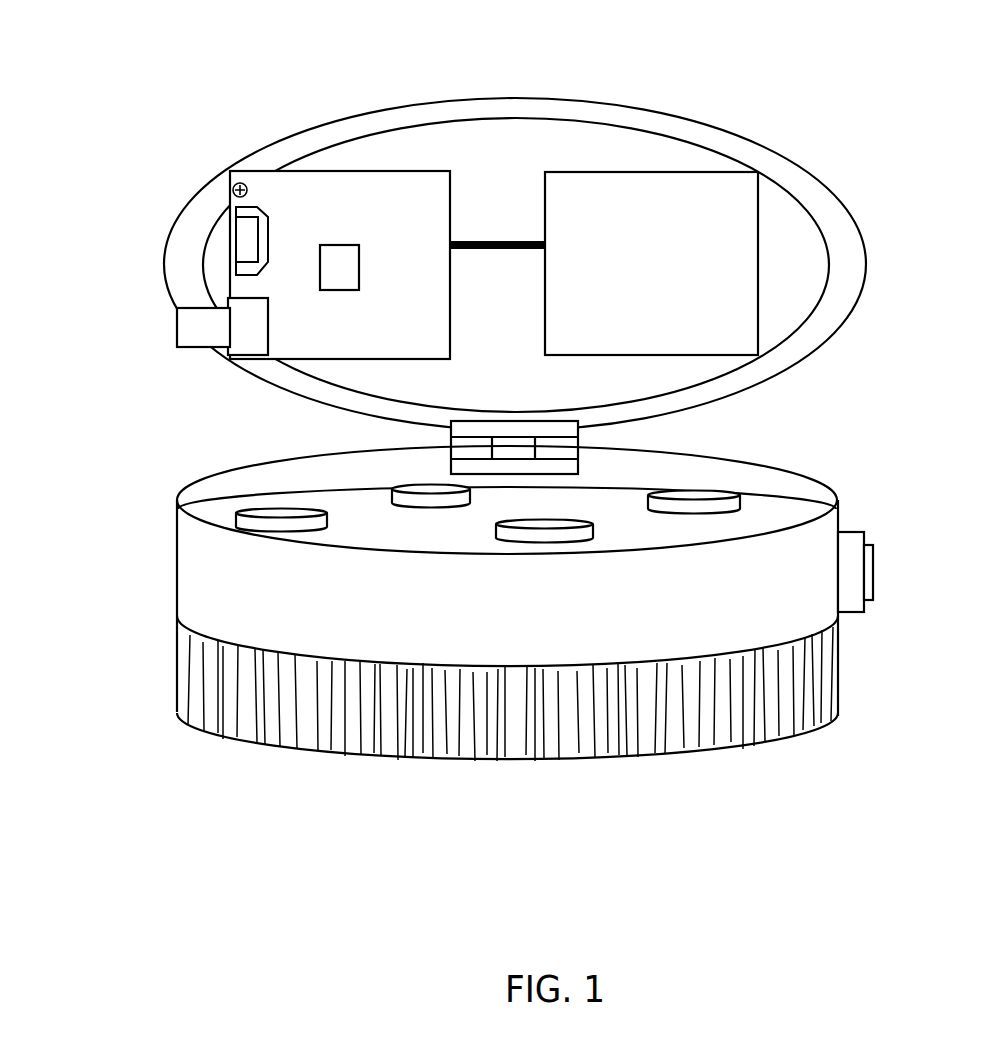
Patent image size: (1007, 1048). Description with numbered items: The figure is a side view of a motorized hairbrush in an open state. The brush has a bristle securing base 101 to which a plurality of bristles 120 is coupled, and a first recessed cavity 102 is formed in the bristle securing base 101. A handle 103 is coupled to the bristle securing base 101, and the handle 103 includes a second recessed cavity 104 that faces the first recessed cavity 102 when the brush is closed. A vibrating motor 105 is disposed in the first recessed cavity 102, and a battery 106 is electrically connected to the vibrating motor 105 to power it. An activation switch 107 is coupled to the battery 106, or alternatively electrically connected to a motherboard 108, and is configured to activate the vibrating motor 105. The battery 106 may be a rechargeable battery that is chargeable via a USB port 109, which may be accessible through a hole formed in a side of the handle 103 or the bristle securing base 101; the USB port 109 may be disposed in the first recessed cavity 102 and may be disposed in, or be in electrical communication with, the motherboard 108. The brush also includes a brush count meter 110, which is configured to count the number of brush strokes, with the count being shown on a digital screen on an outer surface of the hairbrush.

The bristle securing base 101 is at (195, 558).
The first recessed cavity 102 is at (772, 515).
The handle 103 is at (797, 163).
The second recessed cavity 104 is at (795, 268).
The vibrating motor 105 is at (687, 507).
The battery 106 is at (657, 180).
The activation switch 107 is at (850, 597).
The motherboard 108 is at (432, 187).
The USB port 109 is at (178, 325).
The brush count meter 110 is at (335, 243).
The bristles 120 is at (355, 727).